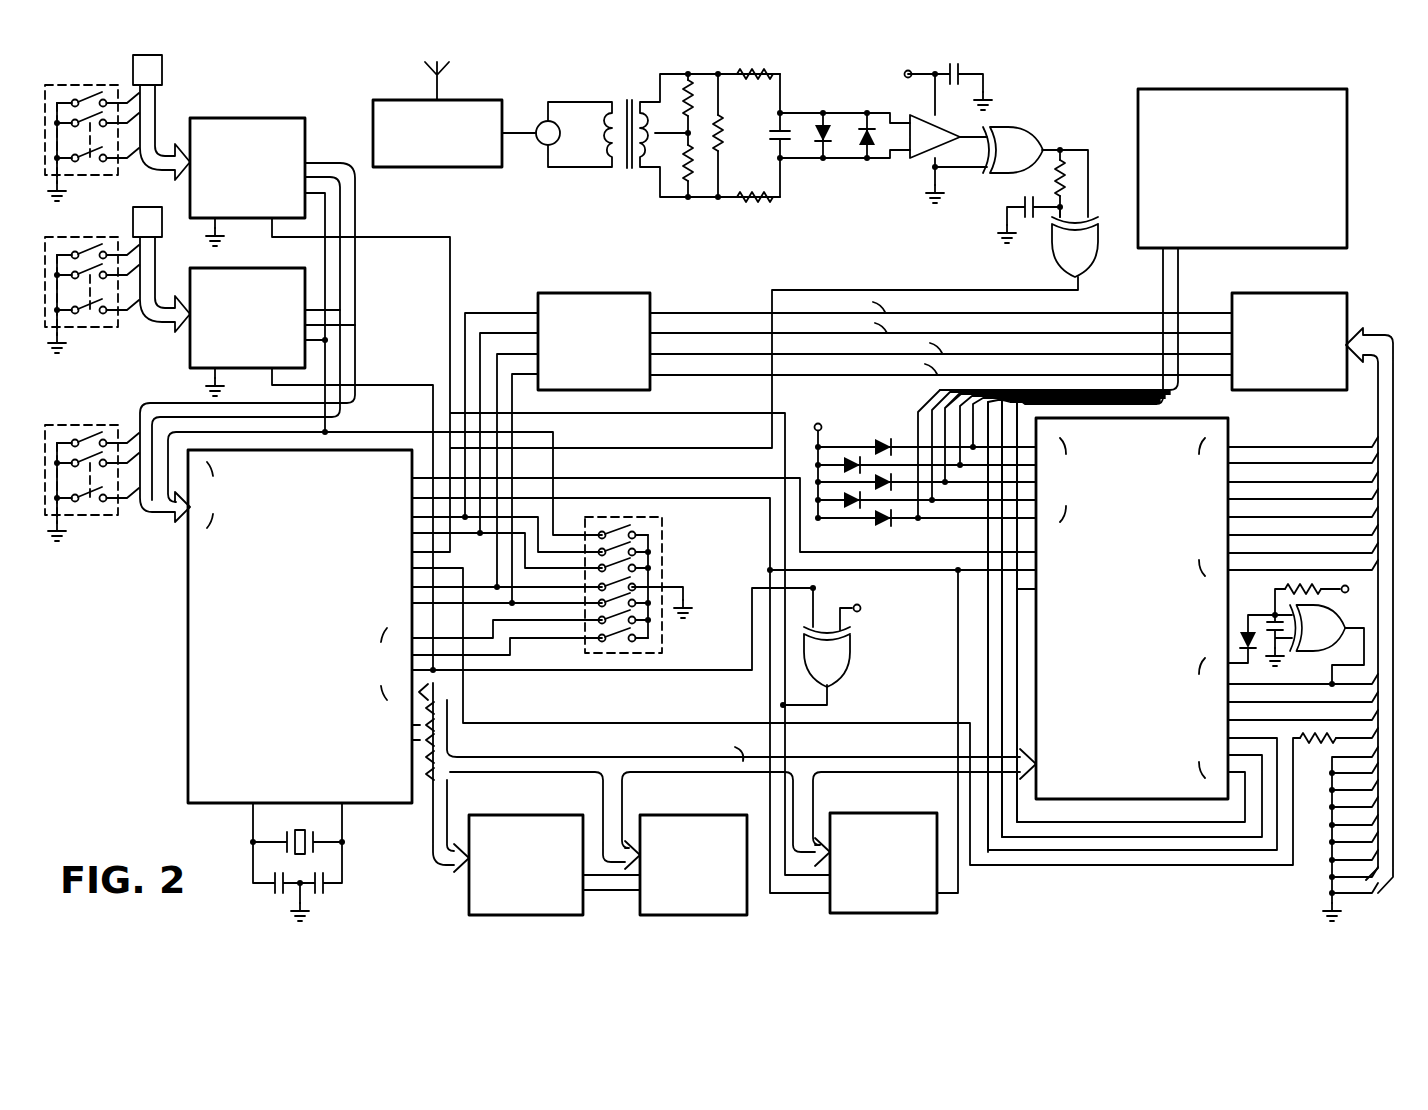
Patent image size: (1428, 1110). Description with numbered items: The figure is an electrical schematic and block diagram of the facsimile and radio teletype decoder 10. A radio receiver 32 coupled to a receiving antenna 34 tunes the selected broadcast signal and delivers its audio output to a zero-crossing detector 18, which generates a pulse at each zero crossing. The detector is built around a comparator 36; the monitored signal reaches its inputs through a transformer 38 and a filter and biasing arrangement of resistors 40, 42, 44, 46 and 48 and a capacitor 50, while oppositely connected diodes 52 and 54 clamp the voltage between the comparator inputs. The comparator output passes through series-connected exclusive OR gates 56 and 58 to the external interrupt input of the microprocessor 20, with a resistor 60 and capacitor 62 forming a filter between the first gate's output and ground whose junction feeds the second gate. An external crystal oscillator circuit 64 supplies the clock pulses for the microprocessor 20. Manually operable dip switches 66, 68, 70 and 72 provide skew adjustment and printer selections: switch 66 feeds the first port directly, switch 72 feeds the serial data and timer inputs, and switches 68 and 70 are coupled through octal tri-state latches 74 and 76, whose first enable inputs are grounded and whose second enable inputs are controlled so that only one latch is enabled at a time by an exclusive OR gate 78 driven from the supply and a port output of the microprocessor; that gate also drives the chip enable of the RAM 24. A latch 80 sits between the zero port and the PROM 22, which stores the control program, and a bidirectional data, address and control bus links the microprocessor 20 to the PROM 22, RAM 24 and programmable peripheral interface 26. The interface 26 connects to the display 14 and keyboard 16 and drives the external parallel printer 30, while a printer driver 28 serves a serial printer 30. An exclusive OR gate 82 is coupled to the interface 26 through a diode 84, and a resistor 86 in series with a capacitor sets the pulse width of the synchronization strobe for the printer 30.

The facsimile and radio teletype decoder 10 is at (118, 686).
The display 14 is at (878, 422).
The keyboard 16 is at (1306, 74).
The zero-crossing detector 18 is at (1033, 115).
The microprocessor 20 is at (188, 609).
The programmable read-only memory (PROM) 22 is at (722, 815).
The random-access memory (RAM) 24 is at (912, 815).
The programmable peripheral interface 26 is at (1234, 436).
The printer driver 28 is at (604, 292).
The external printer 30 is at (1301, 294).
The radio receiver 32 is at (416, 180).
The receiving antenna 34 is at (430, 70).
The comparator 36 is at (916, 158).
The transformer 38 is at (627, 168).
The resistor 40 is at (686, 113).
The resistor 42 is at (687, 174).
The resistor 44 is at (724, 143).
The resistor 46 is at (766, 72).
The resistor 48 is at (754, 211).
The capacitor 50 is at (778, 132).
The diode 52 is at (841, 121).
The diode 54 is at (870, 142).
The exclusive OR gate 56 is at (1036, 140).
The exclusive OR gate 58 is at (1088, 254).
The resistor 60 is at (1034, 190).
The capacitor 62 is at (1034, 232).
The external crystal oscillator circuit 64 is at (283, 848).
The dip switch 66 is at (80, 432).
The dip switch 68 is at (108, 230).
The dip switch 70 is at (105, 86).
The dip switch 72 is at (664, 546).
The octal tri-state latch 74 is at (264, 268).
The octal tri-state latch 76 is at (250, 116).
The exclusive OR gate 78 is at (846, 660).
The latch 80 is at (544, 815).
The exclusive OR gate 82 is at (1327, 646).
The diode 84 is at (1248, 628).
The resistor 86 is at (1336, 591).